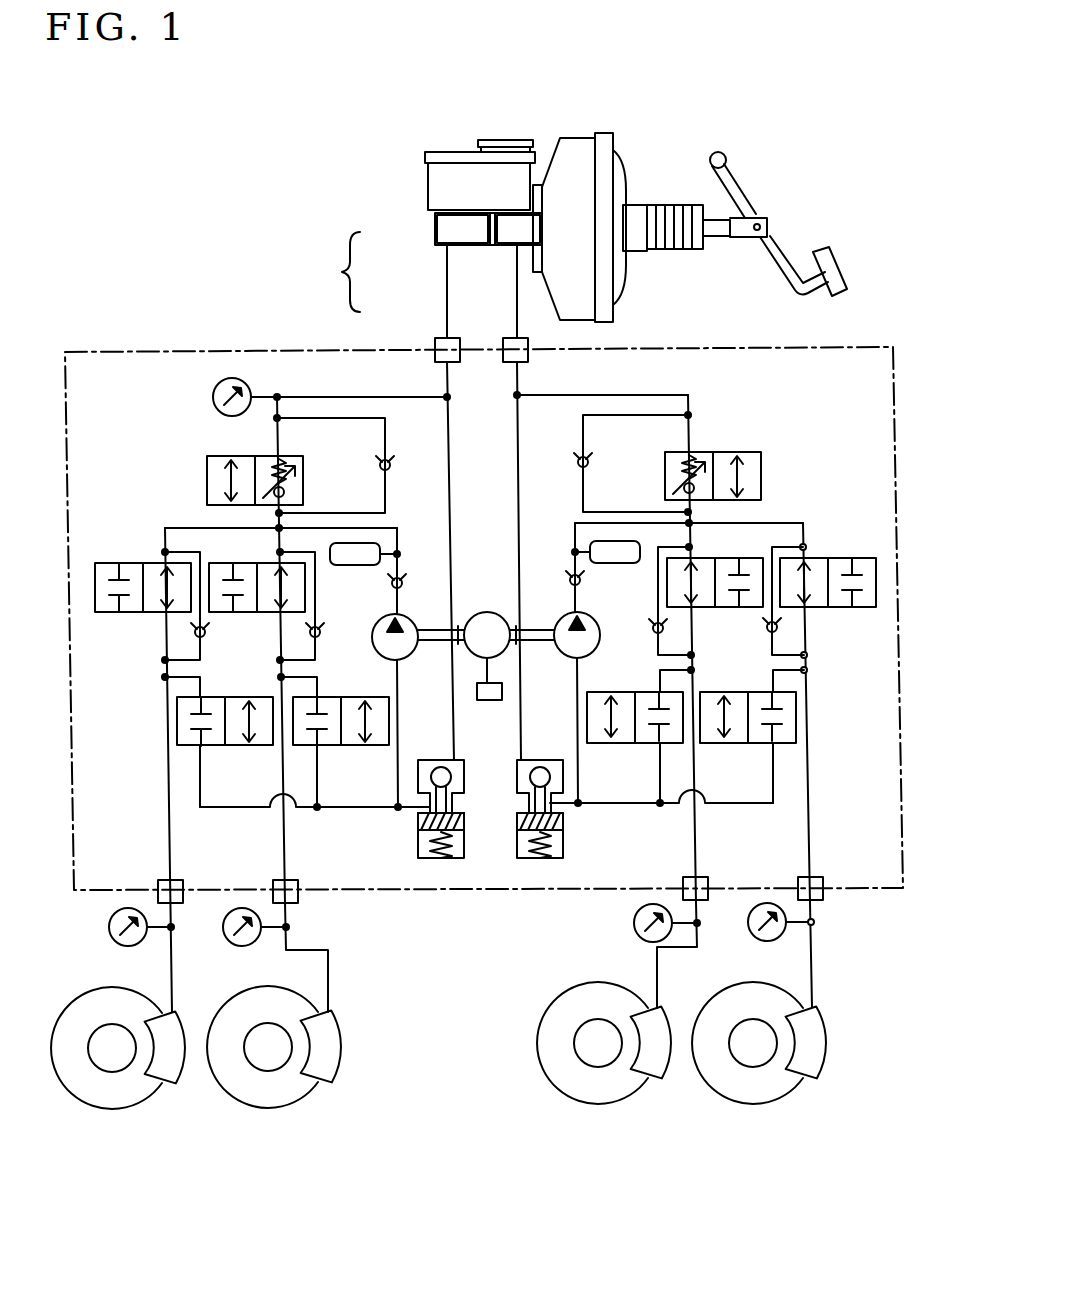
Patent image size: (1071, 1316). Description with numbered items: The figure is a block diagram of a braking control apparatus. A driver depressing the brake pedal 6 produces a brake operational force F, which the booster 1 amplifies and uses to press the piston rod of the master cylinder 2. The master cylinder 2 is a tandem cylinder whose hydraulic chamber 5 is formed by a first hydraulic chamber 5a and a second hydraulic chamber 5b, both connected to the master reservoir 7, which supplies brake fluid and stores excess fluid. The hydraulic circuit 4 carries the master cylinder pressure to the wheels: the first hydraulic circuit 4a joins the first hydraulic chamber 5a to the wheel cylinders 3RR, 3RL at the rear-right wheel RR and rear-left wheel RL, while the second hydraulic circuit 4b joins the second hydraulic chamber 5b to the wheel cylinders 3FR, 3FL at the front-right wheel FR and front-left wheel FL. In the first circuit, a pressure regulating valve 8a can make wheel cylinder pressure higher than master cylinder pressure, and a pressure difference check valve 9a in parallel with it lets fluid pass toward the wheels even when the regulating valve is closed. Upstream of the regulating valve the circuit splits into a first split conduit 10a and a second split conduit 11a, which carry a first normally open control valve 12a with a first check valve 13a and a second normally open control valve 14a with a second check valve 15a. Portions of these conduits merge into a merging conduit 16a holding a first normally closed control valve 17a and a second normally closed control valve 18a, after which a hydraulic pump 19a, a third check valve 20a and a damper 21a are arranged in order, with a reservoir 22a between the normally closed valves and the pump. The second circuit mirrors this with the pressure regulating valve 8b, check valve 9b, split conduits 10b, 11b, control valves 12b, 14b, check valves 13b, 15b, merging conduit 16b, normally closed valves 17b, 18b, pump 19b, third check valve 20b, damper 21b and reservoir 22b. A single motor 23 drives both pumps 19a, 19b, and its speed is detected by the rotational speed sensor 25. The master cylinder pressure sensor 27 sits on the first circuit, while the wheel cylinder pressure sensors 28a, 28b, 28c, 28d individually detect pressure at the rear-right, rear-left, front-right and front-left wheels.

The booster 1 is at (573, 147).
The master cylinder 2 is at (438, 223).
The wheel cylinder 3RR is at (172, 1072).
The wheel cylinder 3RL is at (333, 1062).
The wheel cylinder 3FR is at (660, 1070).
The wheel cylinder 3FL is at (817, 1067).
The rear-right wheel RR is at (102, 1097).
The rear-left wheel RL is at (280, 1097).
The front-right wheel FR is at (578, 1085).
The front-left wheel FL is at (750, 1090).
The hydraulic circuit 4 is at (105, 350).
The first hydraulic circuit 4a is at (447, 318).
The second hydraulic circuit 4b is at (517, 321).
The hydraulic chamber 5 is at (345, 272).
The first hydraulic chamber 5a is at (448, 229).
The second hydraulic chamber 5b is at (503, 245).
The brake pedal 6 is at (826, 252).
The brake operational force F is at (851, 263).
The master reservoir 7 is at (453, 170).
The pressure regulating valve 8a is at (207, 462).
The pressure regulating valve 8b is at (761, 462).
The pressure difference check valve 9a is at (388, 458).
The pressure difference check valve 9b is at (578, 458).
The first split conduit 10a is at (168, 527).
The first split conduit 10b is at (692, 528).
The second split conduit 11a is at (278, 545).
The second split conduit 11b is at (790, 523).
The first normally open control valve 12a is at (135, 613).
The first normally open control valve 12b is at (667, 585).
The first check valve 13a is at (208, 640).
The first check valve 13b is at (650, 640).
The second normally open control valve 14a is at (306, 590).
The second normally open control valve 14b is at (830, 608).
The second check valve 15a is at (322, 640).
The second check valve 15b is at (764, 640).
The merging conduit 16a is at (240, 808).
The merging conduit 16b is at (740, 805).
The first normally closed control valve 17a is at (218, 746).
The first normally closed control valve 17b is at (648, 745).
The second normally closed control valve 18a is at (330, 746).
The second normally closed control valve 18b is at (764, 745).
The hydraulic pump 19a is at (406, 655).
The hydraulic pump 19b is at (566, 655).
The third check valve 20a is at (400, 568).
The third check valve 20b is at (572, 568).
The damper 21a is at (360, 545).
The damper 21b is at (612, 543).
The reservoir 22a is at (418, 838).
The reservoir 22b is at (562, 838).
The motor 23 is at (487, 612).
The rotational speed sensor 25 is at (487, 700).
The master cylinder pressure sensor 27 is at (213, 397).
The rear-right wheel cylinder pressure sensor 28a is at (118, 943).
The rear-left wheel cylinder pressure sensor 28b is at (240, 944).
The front-right wheel cylinder pressure sensor 28c is at (645, 942).
The front-left wheel cylinder pressure sensor 28d is at (760, 942).